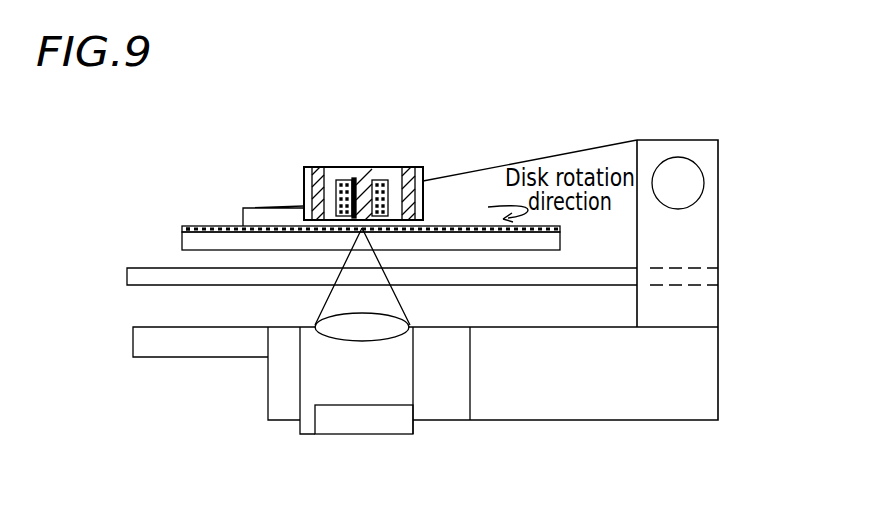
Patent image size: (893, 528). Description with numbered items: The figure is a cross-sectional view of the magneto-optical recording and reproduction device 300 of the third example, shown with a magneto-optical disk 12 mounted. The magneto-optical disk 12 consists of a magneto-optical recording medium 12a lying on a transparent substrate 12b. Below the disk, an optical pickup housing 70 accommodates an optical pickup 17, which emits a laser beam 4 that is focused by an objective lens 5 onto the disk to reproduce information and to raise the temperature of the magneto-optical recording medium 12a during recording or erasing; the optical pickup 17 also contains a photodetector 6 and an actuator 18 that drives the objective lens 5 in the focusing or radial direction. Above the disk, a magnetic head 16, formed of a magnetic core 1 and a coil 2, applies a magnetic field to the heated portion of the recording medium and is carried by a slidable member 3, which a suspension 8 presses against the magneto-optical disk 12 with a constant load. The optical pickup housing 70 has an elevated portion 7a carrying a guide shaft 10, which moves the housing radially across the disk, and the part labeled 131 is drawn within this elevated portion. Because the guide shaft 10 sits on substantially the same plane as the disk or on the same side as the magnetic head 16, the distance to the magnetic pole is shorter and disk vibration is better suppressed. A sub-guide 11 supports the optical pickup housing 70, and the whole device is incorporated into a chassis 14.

The magneto-optical recording and reproduction device 300 is at (576, 88).
The magnetic head 16 is at (380, 92).
The coil 2 is at (339, 178).
The magnetic core 1 is at (359, 178).
The suspension 8 is at (481, 168).
The guide shaft 10 is at (745, 166).
The pivot shaft 131 is at (688, 180).
The elevated portion 7a is at (705, 312).
The slidable member 3 is at (257, 221).
The magneto-optical disk 12 is at (90, 200).
The magneto-optical recording medium 12a is at (196, 222).
The transparent substrate 12b is at (196, 240).
The chassis 14 is at (136, 277).
The sub-guide 11 is at (140, 341).
The laser beam 4 is at (350, 297).
The objective lens 5 is at (378, 322).
The optical pickup housing 70 is at (276, 400).
The optical pickup 17 is at (306, 410).
The photodetector 6 is at (390, 430).
The actuator 18 is at (448, 395).